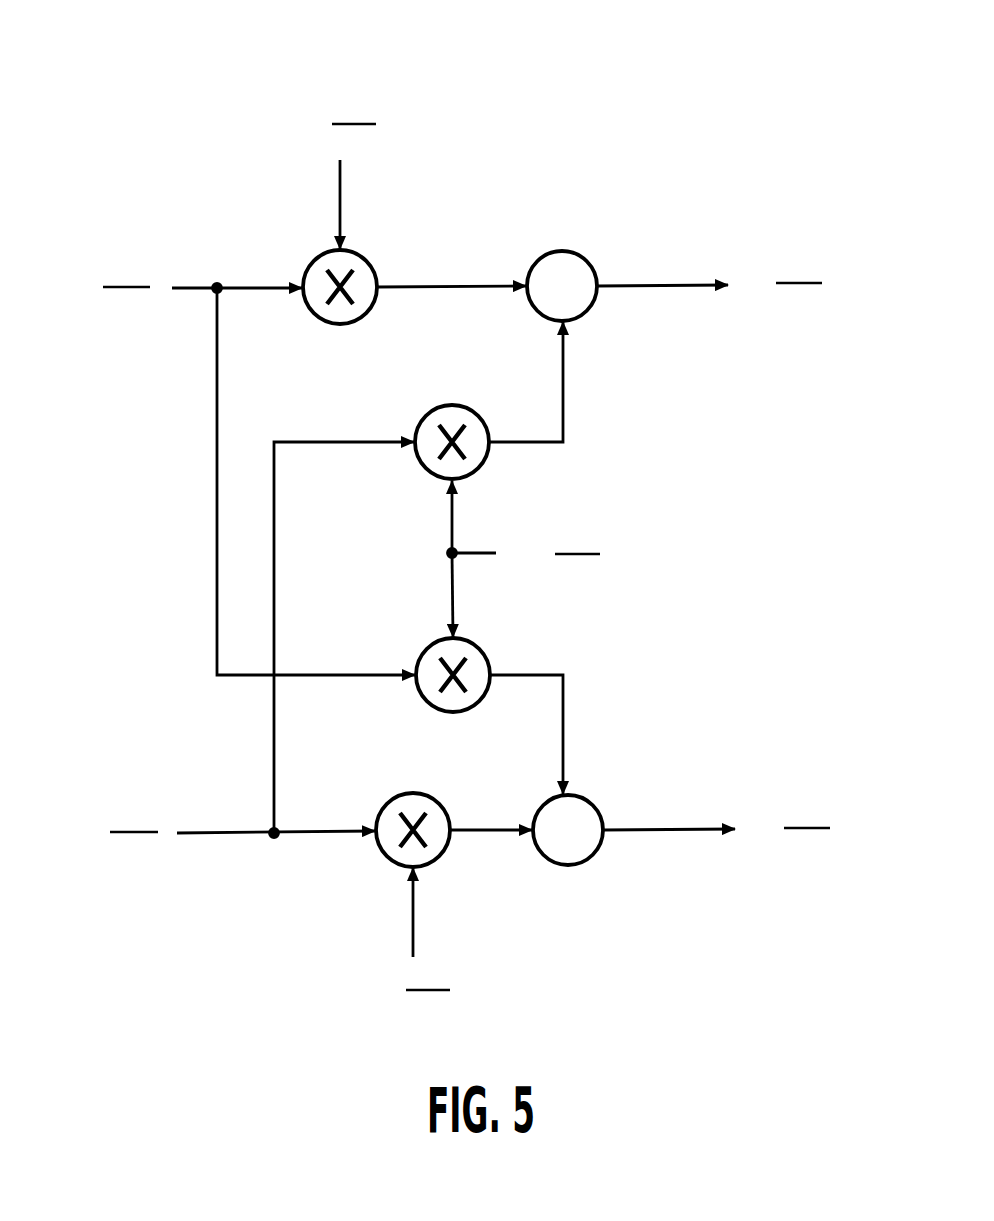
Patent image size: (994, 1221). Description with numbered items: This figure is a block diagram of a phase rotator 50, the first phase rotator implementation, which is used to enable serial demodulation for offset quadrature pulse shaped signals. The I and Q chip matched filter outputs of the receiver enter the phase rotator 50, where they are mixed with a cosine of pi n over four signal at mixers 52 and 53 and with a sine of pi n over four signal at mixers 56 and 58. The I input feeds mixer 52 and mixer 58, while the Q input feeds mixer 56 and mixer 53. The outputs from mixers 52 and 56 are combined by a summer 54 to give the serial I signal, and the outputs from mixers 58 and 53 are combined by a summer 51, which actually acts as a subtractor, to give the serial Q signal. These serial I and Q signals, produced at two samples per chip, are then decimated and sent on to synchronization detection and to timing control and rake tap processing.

The phase rotator 50 is at (588, 51).
The summer 51 is at (594, 805).
The mixer 52 is at (373, 262).
The mixer 53 is at (441, 857).
The summer 54 is at (588, 262).
The mixer 56 is at (486, 467).
The mixer 58 is at (484, 651).